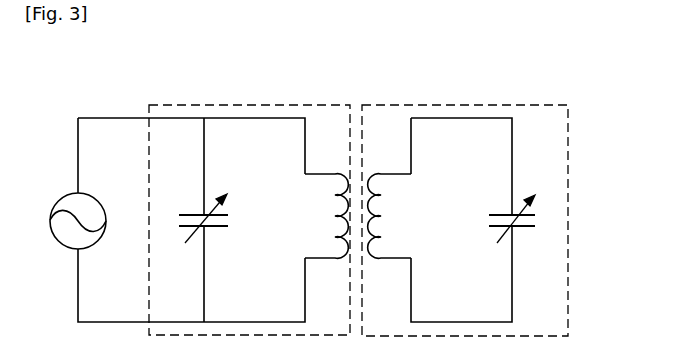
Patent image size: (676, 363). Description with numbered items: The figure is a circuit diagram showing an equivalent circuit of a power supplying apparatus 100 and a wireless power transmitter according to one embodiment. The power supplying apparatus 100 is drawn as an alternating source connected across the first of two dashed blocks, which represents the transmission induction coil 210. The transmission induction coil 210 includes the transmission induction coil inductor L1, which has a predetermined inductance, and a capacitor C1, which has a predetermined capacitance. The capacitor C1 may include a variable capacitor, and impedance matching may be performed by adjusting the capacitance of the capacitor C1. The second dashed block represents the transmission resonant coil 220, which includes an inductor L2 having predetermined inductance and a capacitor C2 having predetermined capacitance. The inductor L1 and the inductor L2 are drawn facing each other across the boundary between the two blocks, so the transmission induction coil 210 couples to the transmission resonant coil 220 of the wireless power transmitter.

The power supplying apparatus 100 is at (61, 198).
The transmission induction coil 210 is at (273, 103).
The transmission resonant coil 220 is at (415, 103).
The capacitor C1 is at (193, 218).
The transmission induction coil inductor L1 is at (326, 216).
The inductor L2 is at (389, 216).
The capacitor C2 is at (523, 219).